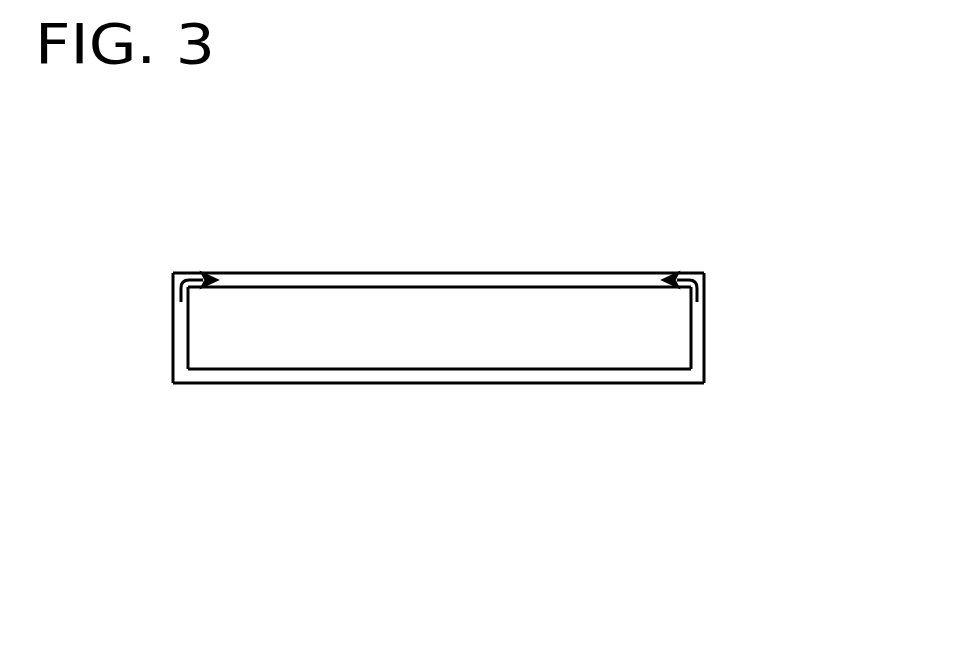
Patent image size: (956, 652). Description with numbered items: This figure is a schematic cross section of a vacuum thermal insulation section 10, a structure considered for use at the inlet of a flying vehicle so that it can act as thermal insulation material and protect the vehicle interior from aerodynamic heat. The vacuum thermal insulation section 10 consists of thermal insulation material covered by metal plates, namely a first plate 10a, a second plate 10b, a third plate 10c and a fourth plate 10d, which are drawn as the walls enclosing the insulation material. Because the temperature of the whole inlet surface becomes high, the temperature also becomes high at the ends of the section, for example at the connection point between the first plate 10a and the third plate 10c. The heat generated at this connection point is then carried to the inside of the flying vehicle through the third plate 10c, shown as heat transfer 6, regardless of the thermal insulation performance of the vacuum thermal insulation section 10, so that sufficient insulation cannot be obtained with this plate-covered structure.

The vacuum thermal insulation section 10 is at (440, 326).
The first plate 10a is at (489, 373).
The second plate 10b is at (582, 273).
The third plate 10c is at (173, 286).
The fourth plate 10d is at (706, 342).
The heat transfer 6 is at (700, 272).